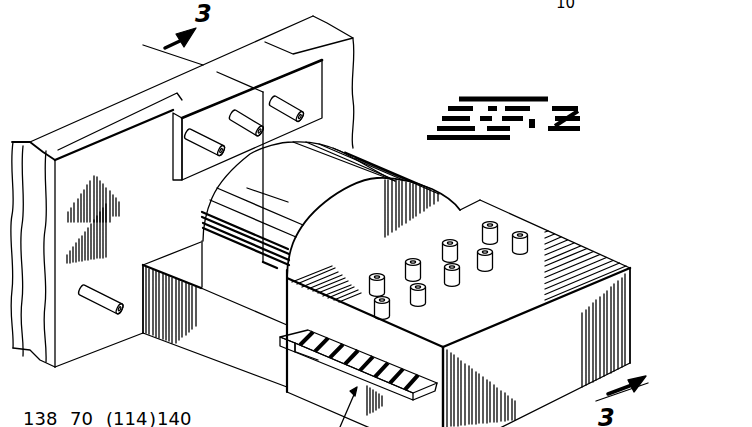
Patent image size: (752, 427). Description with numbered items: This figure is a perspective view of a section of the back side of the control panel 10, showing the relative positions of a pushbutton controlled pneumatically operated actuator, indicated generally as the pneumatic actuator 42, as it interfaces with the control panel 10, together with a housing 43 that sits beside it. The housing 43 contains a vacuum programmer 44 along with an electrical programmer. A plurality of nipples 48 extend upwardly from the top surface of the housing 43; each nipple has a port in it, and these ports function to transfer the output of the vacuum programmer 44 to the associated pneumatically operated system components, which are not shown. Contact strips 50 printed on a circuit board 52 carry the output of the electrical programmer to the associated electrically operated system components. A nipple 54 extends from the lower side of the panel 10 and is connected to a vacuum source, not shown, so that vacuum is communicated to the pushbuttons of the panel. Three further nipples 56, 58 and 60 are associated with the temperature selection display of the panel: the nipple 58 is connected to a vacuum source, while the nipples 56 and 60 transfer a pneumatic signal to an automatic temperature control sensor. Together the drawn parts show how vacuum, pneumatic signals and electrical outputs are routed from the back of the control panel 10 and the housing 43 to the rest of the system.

The control panel 10 is at (82, 110).
The pneumatic actuator 42 is at (245, 267).
The housing 43 is at (631, 282).
The vacuum programmer 44 is at (543, 229).
The nipples 48 is at (490, 221).
The contact strips 50 is at (291, 343).
The circuit board 52 is at (318, 358).
The nipple 54 is at (100, 287).
The nipple 56 is at (193, 150).
The nipple 58 is at (238, 111).
The nipple 60 is at (290, 97).